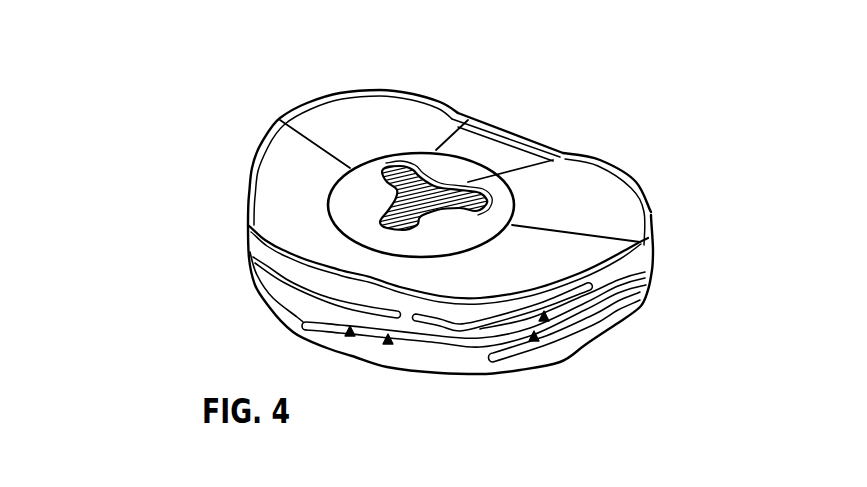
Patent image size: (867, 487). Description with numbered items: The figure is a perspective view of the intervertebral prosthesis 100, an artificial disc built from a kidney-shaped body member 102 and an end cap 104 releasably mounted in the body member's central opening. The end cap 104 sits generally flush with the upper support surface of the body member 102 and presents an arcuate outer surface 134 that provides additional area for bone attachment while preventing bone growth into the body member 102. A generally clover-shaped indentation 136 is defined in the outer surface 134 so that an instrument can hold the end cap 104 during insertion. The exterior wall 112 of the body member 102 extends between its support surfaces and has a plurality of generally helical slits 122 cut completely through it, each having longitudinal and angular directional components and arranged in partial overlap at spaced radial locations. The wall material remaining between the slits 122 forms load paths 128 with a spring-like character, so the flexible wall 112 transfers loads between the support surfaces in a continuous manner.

The intervertebral prosthesis 100 is at (193, 283).
The body member 102 is at (620, 212).
The first end cap 104 is at (512, 143).
The exterior wall 112 is at (643, 297).
The slits 122 is at (463, 353).
The load path 128 is at (388, 340).
The outer surface 134 is at (471, 235).
The indentation 136 is at (412, 165).